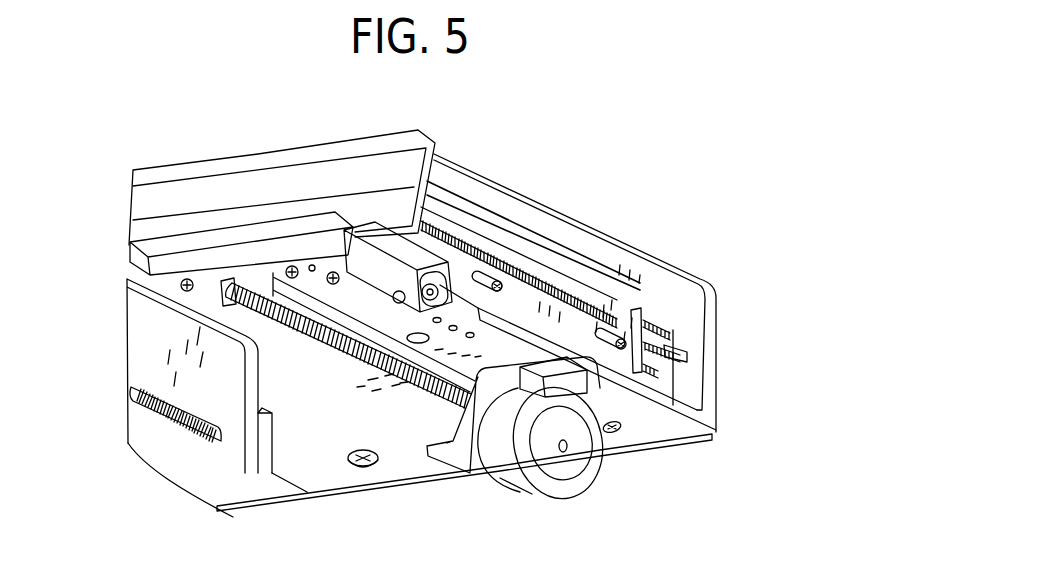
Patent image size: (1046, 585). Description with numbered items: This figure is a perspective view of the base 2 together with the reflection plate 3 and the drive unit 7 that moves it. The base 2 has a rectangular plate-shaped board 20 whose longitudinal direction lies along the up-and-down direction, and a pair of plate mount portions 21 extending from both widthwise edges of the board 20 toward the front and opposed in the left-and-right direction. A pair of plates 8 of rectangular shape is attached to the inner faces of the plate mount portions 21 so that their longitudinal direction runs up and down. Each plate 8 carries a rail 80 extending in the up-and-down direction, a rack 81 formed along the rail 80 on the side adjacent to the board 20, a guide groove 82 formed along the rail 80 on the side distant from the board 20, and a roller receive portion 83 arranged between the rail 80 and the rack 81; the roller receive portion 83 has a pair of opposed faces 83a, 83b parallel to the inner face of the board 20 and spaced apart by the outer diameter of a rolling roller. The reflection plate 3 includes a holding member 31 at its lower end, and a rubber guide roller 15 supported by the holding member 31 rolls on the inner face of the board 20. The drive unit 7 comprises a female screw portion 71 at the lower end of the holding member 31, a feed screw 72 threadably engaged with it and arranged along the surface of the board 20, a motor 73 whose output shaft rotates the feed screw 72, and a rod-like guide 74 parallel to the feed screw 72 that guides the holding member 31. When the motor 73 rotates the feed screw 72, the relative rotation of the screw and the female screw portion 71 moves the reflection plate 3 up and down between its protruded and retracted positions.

The base 2 is at (673, 452).
The reflection plate 3 is at (317, 158).
The drive unit 7 is at (520, 460).
The plate 8 is at (255, 457).
The guide roller 15 is at (474, 333).
The board 20 is at (643, 440).
The plate mount portion 21 is at (719, 320).
The holding member 31 is at (424, 132).
The female screw portion 71 is at (233, 305).
The feed screw 72 is at (333, 337).
The motor 73 is at (533, 468).
The guide 74 is at (370, 310).
The rail 80 is at (465, 232).
The rack 81 is at (487, 243).
The guide groove 82 is at (547, 247).
The roller receive portion 83 is at (703, 294).
The opposed face 83a is at (658, 330).
The opposed face 83b is at (660, 316).